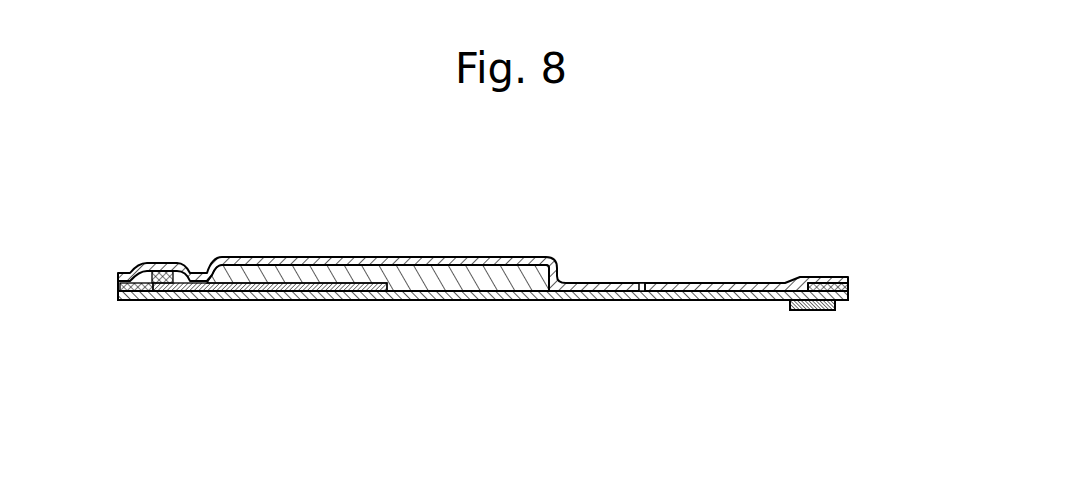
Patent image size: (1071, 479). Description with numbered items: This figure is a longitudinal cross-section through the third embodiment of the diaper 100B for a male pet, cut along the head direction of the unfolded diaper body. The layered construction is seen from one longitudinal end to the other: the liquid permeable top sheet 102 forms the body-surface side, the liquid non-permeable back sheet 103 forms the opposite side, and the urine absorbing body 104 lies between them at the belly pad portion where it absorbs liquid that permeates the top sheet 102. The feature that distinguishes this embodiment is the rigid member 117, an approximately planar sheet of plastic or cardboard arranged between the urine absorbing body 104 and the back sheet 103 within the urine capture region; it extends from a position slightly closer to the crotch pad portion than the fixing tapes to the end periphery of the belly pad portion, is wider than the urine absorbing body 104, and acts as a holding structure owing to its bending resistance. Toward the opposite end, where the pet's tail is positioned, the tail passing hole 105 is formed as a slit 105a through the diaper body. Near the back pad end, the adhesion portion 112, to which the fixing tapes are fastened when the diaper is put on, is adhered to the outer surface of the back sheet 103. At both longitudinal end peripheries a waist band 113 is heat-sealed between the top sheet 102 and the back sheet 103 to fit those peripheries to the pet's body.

The diaper for a male pet 100B is at (412, 258).
The top sheet 102 is at (582, 283).
The back sheet 103 is at (535, 300).
The urine absorbing body 104 is at (442, 283).
The tail passing hole 105 is at (612, 300).
The slit 105a is at (641, 300).
The adhesion portion 112 is at (810, 311).
The waist band 113 is at (118, 294).
The rigid member 117 is at (267, 300).